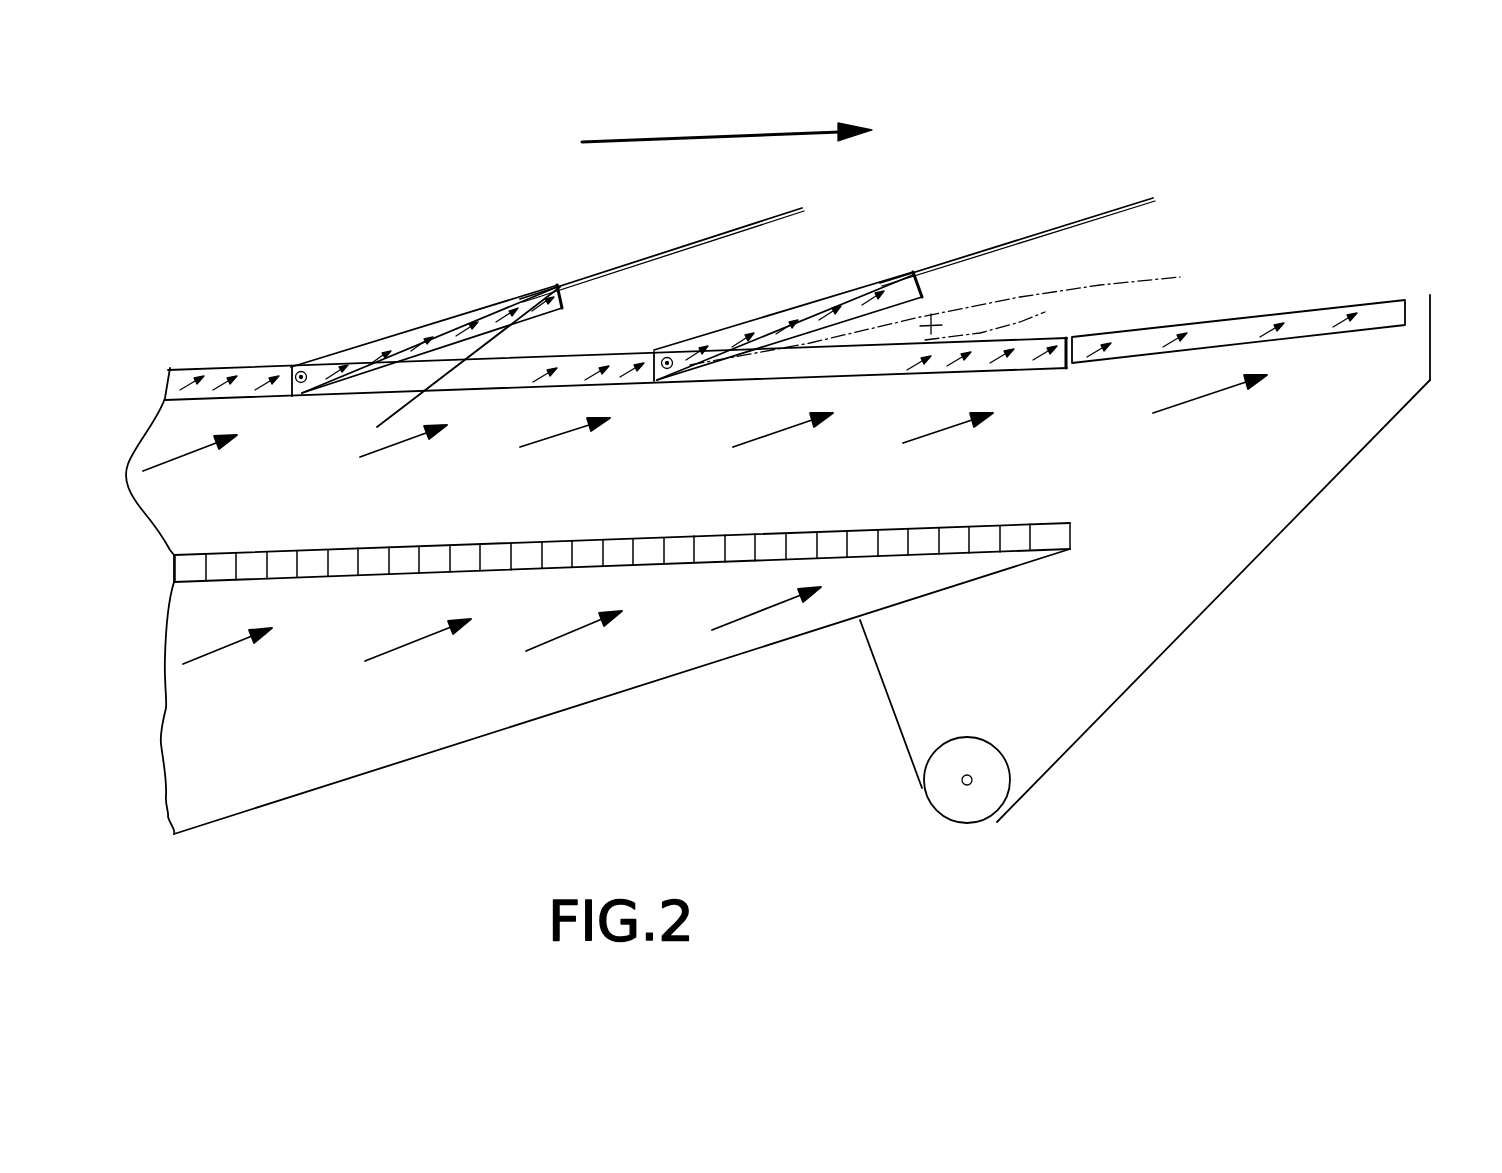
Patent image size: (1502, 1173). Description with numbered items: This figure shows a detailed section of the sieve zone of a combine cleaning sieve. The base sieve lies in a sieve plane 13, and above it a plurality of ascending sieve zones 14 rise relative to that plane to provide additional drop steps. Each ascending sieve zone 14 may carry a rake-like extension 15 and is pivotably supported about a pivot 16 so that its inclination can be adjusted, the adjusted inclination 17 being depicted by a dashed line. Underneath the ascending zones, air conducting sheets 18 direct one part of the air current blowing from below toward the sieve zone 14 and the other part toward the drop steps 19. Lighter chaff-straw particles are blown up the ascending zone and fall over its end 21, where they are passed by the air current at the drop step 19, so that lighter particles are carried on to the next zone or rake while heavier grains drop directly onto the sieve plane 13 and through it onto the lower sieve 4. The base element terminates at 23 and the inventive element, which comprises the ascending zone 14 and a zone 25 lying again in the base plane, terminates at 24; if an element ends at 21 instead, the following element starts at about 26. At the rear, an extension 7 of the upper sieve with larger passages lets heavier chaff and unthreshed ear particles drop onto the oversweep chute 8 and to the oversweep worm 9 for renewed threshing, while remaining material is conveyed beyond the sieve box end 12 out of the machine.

The lower sieve 4 is at (656, 556).
The extension of the upper sieve 7 is at (1232, 331).
The oversweep chute 8 is at (1278, 520).
The oversweep worm 9 is at (969, 800).
The sieve box end 12 is at (1430, 318).
The sieve plane 13 is at (181, 370).
The ascending sieve zone 14 is at (478, 327).
The rake-like extension 15 is at (735, 229).
The pivot 16 is at (313, 367).
The inclination 17 is at (1065, 341).
The air conducting sheet 18 is at (407, 410).
The drop step 19 is at (567, 335).
The end of ascending sieve zone 21 is at (568, 303).
The termination of base element 23 is at (299, 374).
The termination of inventive element 24 is at (660, 360).
The zone in the base plane 25 is at (572, 369).
The start of following element 26 is at (527, 362).